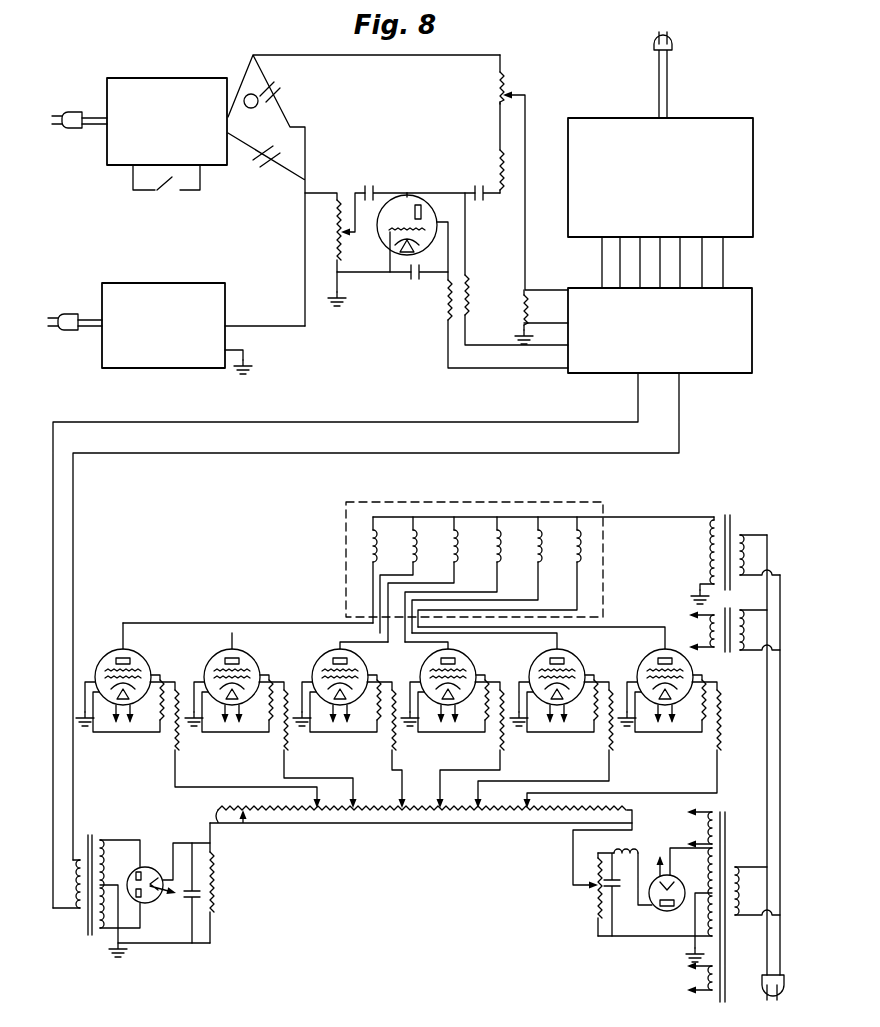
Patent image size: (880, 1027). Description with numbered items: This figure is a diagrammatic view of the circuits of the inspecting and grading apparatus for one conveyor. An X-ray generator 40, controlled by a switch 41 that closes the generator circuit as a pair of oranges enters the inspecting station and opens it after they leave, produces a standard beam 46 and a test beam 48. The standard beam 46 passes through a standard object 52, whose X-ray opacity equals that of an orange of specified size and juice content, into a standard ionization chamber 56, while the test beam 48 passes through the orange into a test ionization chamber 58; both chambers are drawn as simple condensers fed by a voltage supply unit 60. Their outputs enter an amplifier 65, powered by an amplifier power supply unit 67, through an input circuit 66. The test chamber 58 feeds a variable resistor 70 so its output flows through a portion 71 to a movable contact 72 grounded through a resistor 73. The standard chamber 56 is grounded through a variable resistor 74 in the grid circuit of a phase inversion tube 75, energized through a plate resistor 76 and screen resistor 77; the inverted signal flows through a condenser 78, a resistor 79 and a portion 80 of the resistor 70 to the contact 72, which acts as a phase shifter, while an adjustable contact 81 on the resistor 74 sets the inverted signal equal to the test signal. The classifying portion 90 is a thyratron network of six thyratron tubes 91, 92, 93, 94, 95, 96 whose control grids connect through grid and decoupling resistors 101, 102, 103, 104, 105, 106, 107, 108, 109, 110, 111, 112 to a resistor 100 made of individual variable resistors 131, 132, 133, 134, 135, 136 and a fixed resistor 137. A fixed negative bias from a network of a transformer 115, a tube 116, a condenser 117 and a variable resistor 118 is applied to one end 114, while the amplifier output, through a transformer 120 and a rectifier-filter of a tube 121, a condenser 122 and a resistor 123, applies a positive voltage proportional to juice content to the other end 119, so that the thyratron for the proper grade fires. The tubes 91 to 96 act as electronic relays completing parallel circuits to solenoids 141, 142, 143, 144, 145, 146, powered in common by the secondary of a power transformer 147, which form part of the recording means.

The X-ray generator 40 is at (149, 76).
The switch 41 is at (160, 191).
The standard beam 46 is at (249, 154).
The test beam 48 is at (246, 94).
The standard object 52 is at (261, 150).
The standard ionization chamber 56 is at (264, 171).
The test ionization chamber 58 is at (281, 92).
The voltage supply unit 60 is at (162, 282).
The amplifier 65 is at (566, 384).
The input circuit 66 is at (385, 288).
The amplifier power supply unit 67 is at (730, 116).
The variable resistor 70 is at (498, 93).
The portion of the resistor 71 is at (501, 82).
The movable contact 72 is at (527, 94).
The resistor 73 is at (523, 314).
The variable resistor 74 is at (340, 232).
The phase inversion tube 75 is at (414, 191).
The plate resistor 76 is at (467, 284).
The screen resistor 77 is at (446, 306).
The condenser 78 is at (492, 198).
The resistor 79 is at (498, 160).
The portion of the resistor 80 is at (500, 103).
The adjustable contact 81 is at (350, 235).
The classifying portion of the inspecting means 90 is at (272, 618).
The thyratron tube 91 is at (118, 644).
The thyratron tube 92 is at (222, 648).
The thyratron tube 93 is at (320, 657).
The thyratron tube 94 is at (464, 666).
The thyratron tube 95 is at (578, 666).
The thyratron tube 96 is at (691, 658).
The resistor 100 is at (408, 823).
The grid and decoupling resistor 101 is at (150, 714).
The grid and decoupling resistor 102 is at (174, 740).
The grid and decoupling resistor 103 is at (264, 714).
The grid and decoupling resistor 104 is at (288, 740).
The grid and decoupling resistor 105 is at (372, 714).
The grid and decoupling resistor 106 is at (392, 740).
The grid and decoupling resistor 107 is at (482, 714).
The grid and decoupling resistor 108 is at (500, 740).
The grid and decoupling resistor 109 is at (594, 714).
The grid and decoupling resistor 110 is at (609, 742).
The grid and decoupling resistor 111 is at (700, 716).
The grid and decoupling resistor 112 is at (716, 745).
The end of the resistor 114 is at (640, 812).
The transformer 115 is at (720, 840).
The tube 116 is at (660, 912).
The condenser 117 is at (624, 860).
The variable resistor 118 is at (595, 898).
The end of the resistor 119 is at (216, 808).
The transformer 120 is at (78, 924).
The tube 121 is at (144, 866).
The condenser 122 is at (188, 898).
The resistor 123 is at (214, 892).
The variable resistor 131 is at (313, 820).
The variable resistor 132 is at (360, 820).
The variable resistor 133 is at (396, 824).
The variable resistor 134 is at (446, 823).
The variable resistor 135 is at (484, 822).
The variable resistor 136 is at (530, 822).
The fixed resistor 137 is at (600, 794).
The solenoid 141 is at (370, 554).
The solenoid 142 is at (416, 546).
The solenoid 143 is at (457, 546).
The solenoid 144 is at (500, 546).
The solenoid 145 is at (541, 546).
The solenoid 146 is at (580, 546).
The power transformer 147 is at (744, 518).